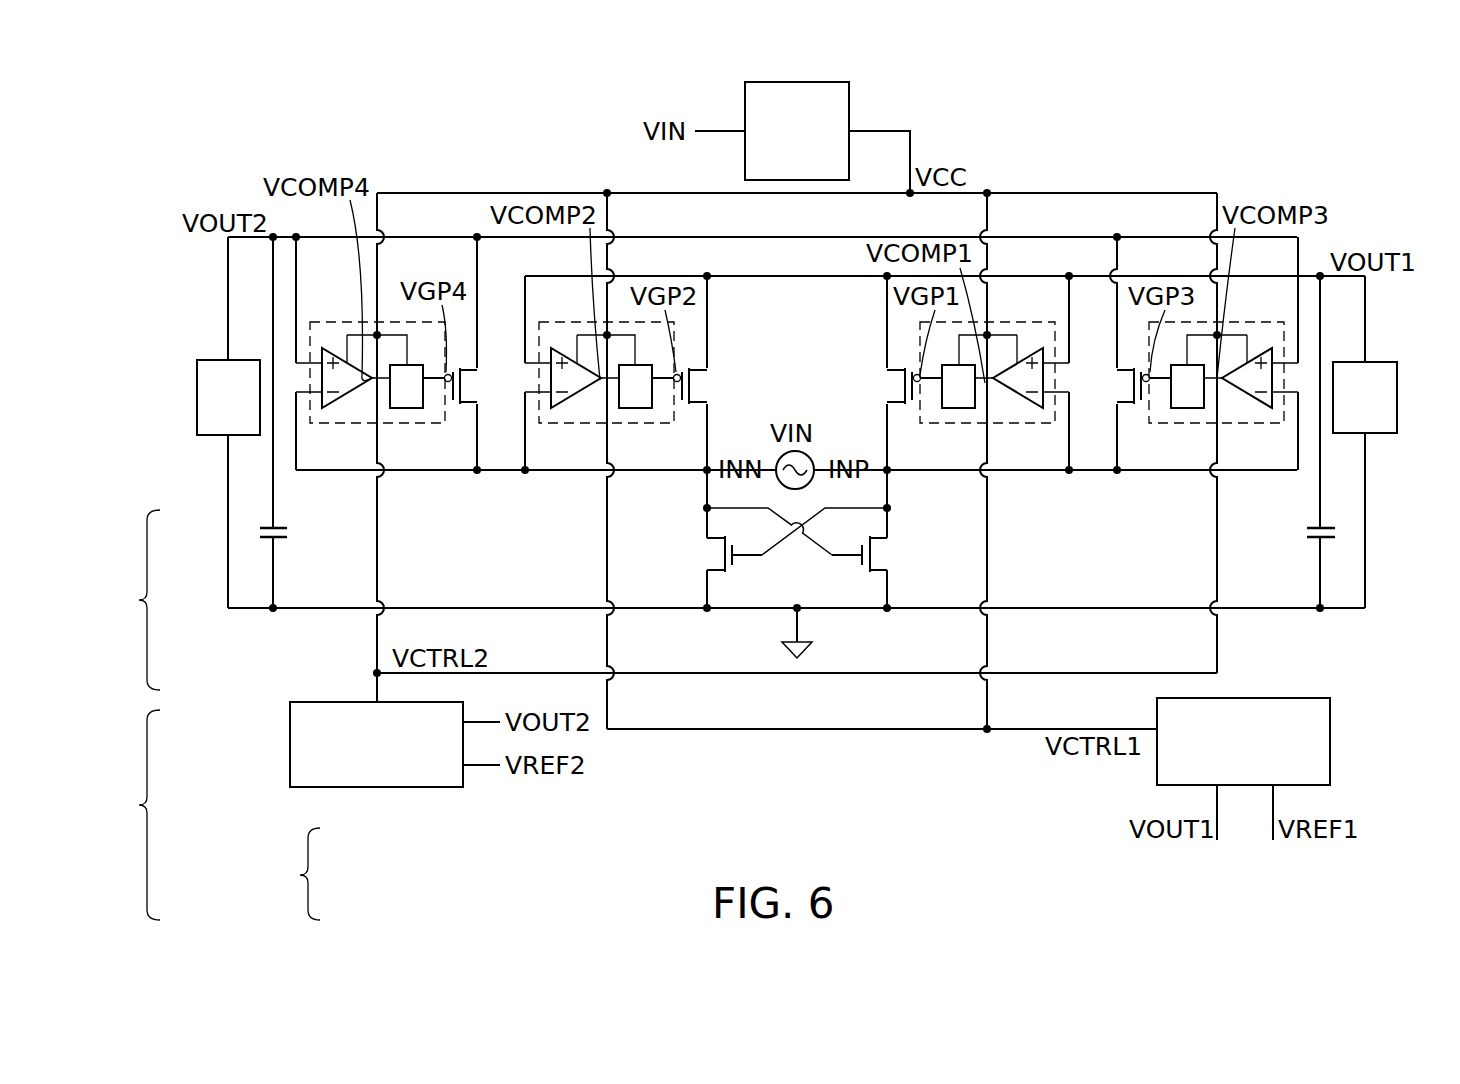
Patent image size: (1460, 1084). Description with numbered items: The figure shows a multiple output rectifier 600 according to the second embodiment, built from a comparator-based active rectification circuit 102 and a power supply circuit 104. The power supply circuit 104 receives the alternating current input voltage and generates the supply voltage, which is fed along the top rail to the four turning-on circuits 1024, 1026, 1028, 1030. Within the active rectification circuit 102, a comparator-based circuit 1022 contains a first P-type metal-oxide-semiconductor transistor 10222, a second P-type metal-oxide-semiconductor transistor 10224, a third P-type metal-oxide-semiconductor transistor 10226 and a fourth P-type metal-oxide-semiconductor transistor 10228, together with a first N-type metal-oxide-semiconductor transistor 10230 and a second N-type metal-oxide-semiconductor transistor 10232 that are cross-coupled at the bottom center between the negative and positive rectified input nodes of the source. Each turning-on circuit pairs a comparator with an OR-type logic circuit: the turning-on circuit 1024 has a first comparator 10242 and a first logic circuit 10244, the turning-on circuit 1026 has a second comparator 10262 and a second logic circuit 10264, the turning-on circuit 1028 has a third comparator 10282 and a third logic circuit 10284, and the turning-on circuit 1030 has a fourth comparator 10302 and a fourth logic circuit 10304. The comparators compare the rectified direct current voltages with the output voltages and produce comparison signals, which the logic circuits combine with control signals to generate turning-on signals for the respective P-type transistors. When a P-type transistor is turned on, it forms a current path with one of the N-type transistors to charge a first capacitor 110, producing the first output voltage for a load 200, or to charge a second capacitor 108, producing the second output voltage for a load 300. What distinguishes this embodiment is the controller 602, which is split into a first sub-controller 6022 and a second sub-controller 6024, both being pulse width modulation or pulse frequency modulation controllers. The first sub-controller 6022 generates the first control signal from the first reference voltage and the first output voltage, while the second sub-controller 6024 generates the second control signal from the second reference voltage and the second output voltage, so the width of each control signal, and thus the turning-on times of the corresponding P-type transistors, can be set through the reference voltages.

The multiple output rectifier 600 is at (1268, 140).
The power supply circuit 104 is at (849, 112).
The comparator-based active rectification circuit 102 is at (139, 600).
The comparator-based circuit 1022 is at (139, 805).
The turning-on circuit 1024 is at (1025, 320).
The turning-on circuit 1026 is at (572, 320).
The turning-on circuit 1028 is at (1255, 320).
The turning-on circuit 1030 is at (358, 322).
The first P-type metal-oxide-semiconductor transistor 10222 is at (892, 388).
The second P-type metal-oxide-semiconductor transistor 10224 is at (707, 388).
The third P-type metal-oxide-semiconductor transistor 10226 is at (1117, 382).
The fourth P-type metal-oxide-semiconductor transistor 10228 is at (480, 382).
The first N-type metal-oxide-semiconductor transistor 10230 is at (880, 556).
The second N-type metal-oxide-semiconductor transistor 10232 is at (708, 556).
The first comparator 10242 is at (1025, 410).
The first logic circuit 10244 is at (954, 410).
The second comparator 10262 is at (580, 410).
The second logic circuit 10264 is at (642, 410).
The third comparator 10282 is at (1245, 410).
The third logic circuit 10284 is at (1185, 410).
The fourth comparator 10302 is at (350, 410).
The fourth logic circuit 10304 is at (406, 410).
The second capacitor 108 is at (288, 532).
The first capacitor 110 is at (1306, 532).
The load 200 is at (1397, 396).
The load 300 is at (197, 392).
The controller 602 is at (300, 875).
The first sub-controller 6022 is at (1330, 735).
The second sub-controller 6024 is at (330, 700).